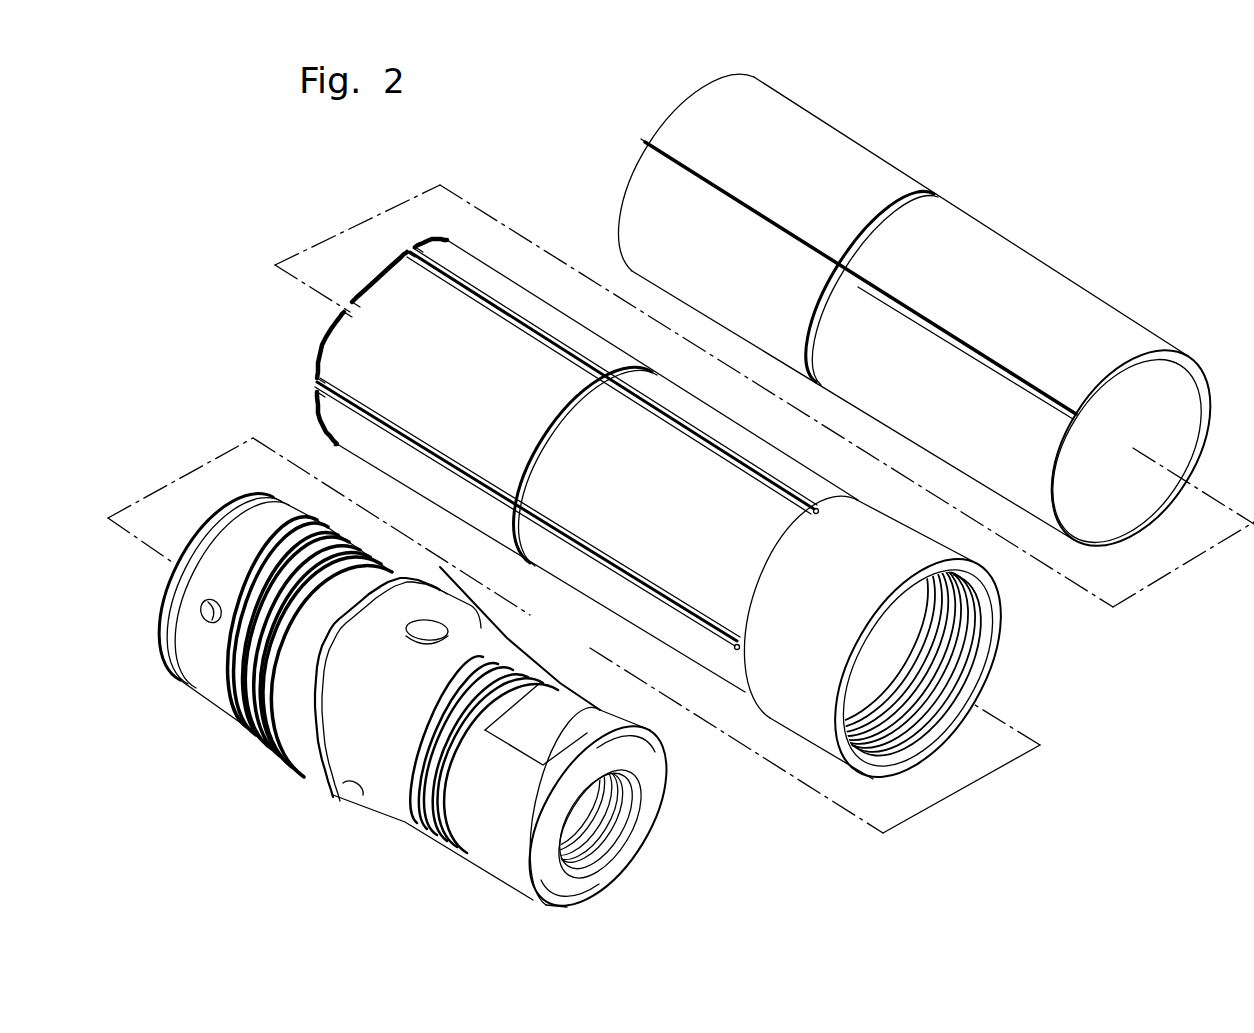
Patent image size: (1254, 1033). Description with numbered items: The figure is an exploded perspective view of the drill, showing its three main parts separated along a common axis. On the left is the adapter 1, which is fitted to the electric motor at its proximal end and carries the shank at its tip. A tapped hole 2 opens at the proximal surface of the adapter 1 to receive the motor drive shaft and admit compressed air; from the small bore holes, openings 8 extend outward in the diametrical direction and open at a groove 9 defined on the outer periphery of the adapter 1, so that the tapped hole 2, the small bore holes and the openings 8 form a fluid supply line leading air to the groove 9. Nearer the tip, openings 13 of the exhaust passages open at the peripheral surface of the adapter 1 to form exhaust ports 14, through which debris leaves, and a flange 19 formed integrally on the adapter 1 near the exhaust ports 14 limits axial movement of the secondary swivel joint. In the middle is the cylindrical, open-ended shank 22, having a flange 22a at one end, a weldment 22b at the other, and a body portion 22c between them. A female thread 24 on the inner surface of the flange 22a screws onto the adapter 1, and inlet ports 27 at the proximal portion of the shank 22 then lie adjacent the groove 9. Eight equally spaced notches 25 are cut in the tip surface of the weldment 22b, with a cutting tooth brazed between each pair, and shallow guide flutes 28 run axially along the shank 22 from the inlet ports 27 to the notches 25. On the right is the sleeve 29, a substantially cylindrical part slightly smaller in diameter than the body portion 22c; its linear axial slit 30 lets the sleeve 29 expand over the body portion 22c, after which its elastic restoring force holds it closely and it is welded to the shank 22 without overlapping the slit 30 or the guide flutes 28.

The adapter 1 is at (415, 711).
The tapped hole 2 is at (598, 826).
The opening 8 is at (211, 623).
The groove 9 is at (215, 611).
The opening 13 is at (440, 638).
The exhaust port 14 is at (407, 636).
The flange 19 is at (467, 603).
The shank 22 is at (694, 522).
The flange 22a is at (896, 650).
The weldment 22b is at (382, 365).
The body portion 22c is at (586, 466).
The female thread 24 is at (972, 677).
The notch 25 is at (412, 262).
The inlet port 27 is at (822, 510).
The guide flute 28 is at (731, 462).
The sleeve 29 is at (931, 324).
The slit 30 is at (1012, 366).